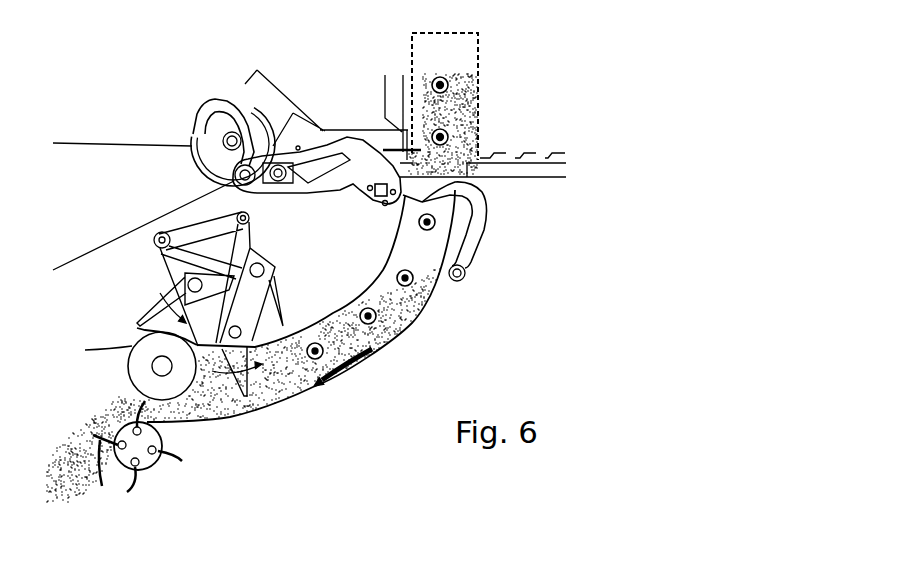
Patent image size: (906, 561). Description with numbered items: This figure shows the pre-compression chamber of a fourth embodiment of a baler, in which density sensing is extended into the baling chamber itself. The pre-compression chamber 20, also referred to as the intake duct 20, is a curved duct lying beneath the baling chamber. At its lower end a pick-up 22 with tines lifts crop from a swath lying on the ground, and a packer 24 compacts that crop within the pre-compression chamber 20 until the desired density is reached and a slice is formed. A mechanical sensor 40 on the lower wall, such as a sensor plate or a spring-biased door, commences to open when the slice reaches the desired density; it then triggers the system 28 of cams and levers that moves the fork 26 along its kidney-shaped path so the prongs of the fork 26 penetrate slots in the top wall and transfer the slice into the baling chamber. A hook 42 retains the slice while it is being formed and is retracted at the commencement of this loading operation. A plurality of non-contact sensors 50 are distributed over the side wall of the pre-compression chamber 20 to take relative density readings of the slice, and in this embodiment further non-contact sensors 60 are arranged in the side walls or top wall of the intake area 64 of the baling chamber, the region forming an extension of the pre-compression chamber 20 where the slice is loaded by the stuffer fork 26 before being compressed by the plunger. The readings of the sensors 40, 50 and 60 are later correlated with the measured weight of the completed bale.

The pre-compression chamber 20 is at (412, 324).
The pick-up 22 is at (125, 434).
The packer 24 is at (291, 270).
The fork 26 is at (362, 191).
The system of cams and levers 28 is at (204, 92).
The mechanical sensor 40 is at (352, 367).
The hook 42 is at (485, 218).
The non-contact sensors 50 is at (418, 225).
The non-contact sensors 60 is at (479, 85).
The intake area 64 is at (479, 53).